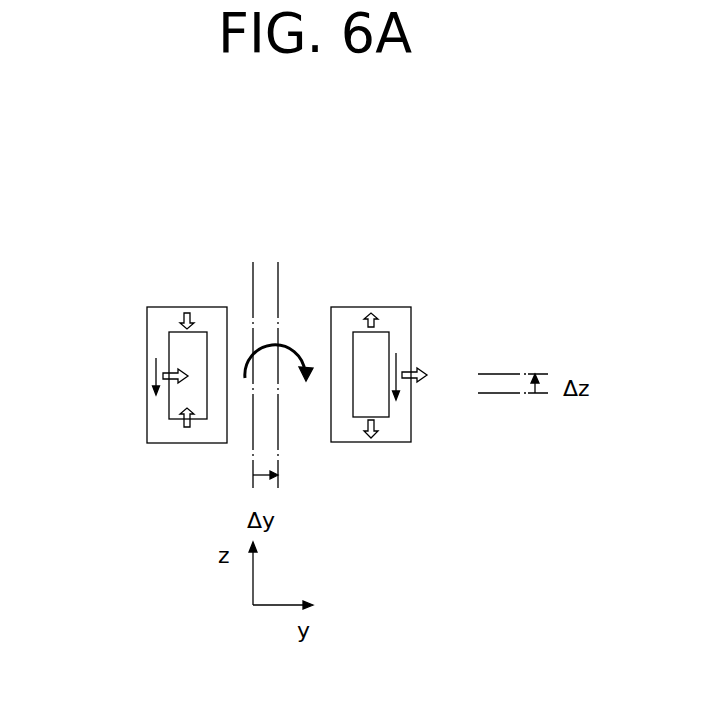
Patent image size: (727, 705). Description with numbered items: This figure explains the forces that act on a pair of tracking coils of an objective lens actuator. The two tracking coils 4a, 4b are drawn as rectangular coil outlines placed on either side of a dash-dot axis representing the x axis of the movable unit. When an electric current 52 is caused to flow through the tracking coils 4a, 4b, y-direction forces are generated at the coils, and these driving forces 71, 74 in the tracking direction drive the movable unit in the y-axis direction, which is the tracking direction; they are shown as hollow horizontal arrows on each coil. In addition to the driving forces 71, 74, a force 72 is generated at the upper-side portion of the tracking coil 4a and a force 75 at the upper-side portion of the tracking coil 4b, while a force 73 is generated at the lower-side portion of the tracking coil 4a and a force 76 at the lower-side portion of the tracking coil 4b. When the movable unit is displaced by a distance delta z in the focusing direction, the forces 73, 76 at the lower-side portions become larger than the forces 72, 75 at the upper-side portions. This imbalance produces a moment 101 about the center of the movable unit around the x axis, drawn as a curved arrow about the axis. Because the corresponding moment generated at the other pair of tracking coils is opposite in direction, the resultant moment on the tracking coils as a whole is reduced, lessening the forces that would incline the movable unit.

The tracking coil 4a is at (162, 317).
The tracking coil 4b is at (400, 318).
The electric current 52 is at (155, 367).
The driving force in the tracking direction 71 is at (166, 374).
The force at the upper-side portion 72 is at (188, 316).
The force at the lower-side portion 73 is at (183, 419).
The driving force in the tracking direction 74 is at (411, 375).
The force at the upper-side portion 75 is at (381, 318).
The force at the lower-side portion 76 is at (380, 426).
The moment 101 is at (279, 348).